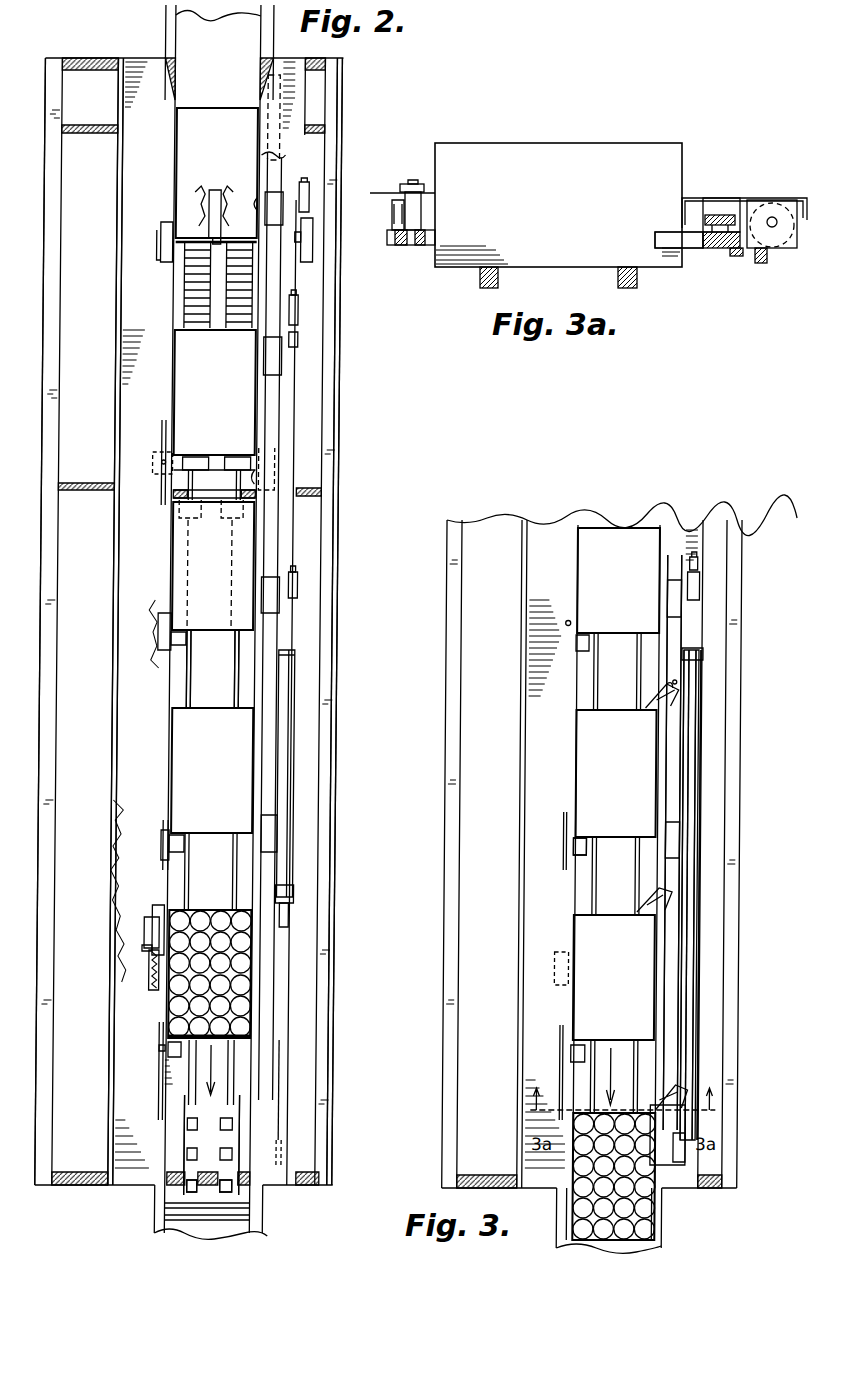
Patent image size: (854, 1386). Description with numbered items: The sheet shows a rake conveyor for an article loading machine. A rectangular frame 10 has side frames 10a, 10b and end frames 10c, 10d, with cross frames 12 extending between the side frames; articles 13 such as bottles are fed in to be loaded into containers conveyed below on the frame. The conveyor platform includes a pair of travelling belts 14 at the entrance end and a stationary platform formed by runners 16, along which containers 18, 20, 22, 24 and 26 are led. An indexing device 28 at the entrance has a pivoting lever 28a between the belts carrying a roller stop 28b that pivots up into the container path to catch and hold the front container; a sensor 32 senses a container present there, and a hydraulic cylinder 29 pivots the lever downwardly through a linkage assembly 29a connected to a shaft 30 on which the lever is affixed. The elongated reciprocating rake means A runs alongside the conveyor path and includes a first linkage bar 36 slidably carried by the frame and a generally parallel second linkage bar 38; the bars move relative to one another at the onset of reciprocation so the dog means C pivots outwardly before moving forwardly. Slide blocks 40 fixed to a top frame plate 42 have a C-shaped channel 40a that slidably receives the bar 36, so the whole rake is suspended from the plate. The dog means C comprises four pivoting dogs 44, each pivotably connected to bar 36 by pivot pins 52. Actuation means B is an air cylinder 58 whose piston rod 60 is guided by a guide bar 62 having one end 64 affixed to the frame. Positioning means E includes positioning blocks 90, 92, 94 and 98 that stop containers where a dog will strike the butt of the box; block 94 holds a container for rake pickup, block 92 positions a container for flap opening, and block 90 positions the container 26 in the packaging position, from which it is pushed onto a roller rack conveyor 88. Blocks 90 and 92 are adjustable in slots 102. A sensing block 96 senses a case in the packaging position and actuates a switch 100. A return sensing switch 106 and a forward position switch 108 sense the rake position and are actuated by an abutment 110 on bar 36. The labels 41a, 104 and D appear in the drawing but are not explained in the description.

In FIG. 2, the rectangular frame 10 is at (336, 1012).
In FIG. 2, the side frame 10a is at (341, 944).
In FIG. 2, the side frame 10b is at (52, 823).
In FIG. 2, the end frame 10c is at (67, 1185).
In FIG. 2, the end frame 10d is at (72, 59).
In FIG. 2, the cross frame 12 is at (92, 482).
In FIG. 2, the articles 13 is at (252, 962).
In FIG. 3, the articles 13 is at (613, 1176).
In FIG. 2, the belts 14 is at (206, 442).
In FIG. 2, the runners 16 is at (190, 682).
In FIG. 2, the container 18 is at (224, 165).
In FIG. 2, the container 20 is at (226, 404).
In FIG. 2, the container 22 is at (227, 574).
In FIG. 2, the container 24 is at (229, 772).
In FIG. 2, the container 26 is at (254, 1032).
In FIG. 2, the indexing device 28 is at (200, 210).
In FIG. 2, the pivoting lever 28a is at (214, 196).
In FIG. 2, the roller stop 28b is at (222, 248).
In FIG. 2, the hydraulic cylinder 29 is at (317, 237).
In FIG. 2, the linkage assembly 29a is at (312, 202).
In FIG. 2, the shaft 30 is at (264, 208).
In FIG. 2, the sensor 32 is at (164, 238).
In FIG. 3A, the first linkage bar 36 is at (680, 198).
In FIG. 3A, the second linkage bar 38 is at (730, 256).
In FIG. 3A, the slide blocks 40 is at (732, 212).
In FIG. 3A, the C-shaped channel 40a is at (714, 210).
In FIG. 3, the roller bracket 41a is at (680, 1096).
In FIG. 2, the top frame plate 42 is at (294, 1186).
In FIG. 3A, the top frame plate 42 is at (751, 198).
In FIG. 3, the pivoting dogs 44 is at (660, 696).
In FIG. 3A, the pivot pins 52 is at (670, 232).
In FIG. 2, the air cylinder 58 is at (290, 735).
In FIG. 3A, the air cylinder 58 is at (770, 206).
In FIG. 3, the air cylinder 58 is at (696, 821).
In FIG. 3A, the piston rod 60 is at (775, 232).
In FIG. 3, the piston rod 60 is at (690, 960).
In FIG. 3A, the guide bar 62 is at (763, 264).
In FIG. 2, the end of guide bar 64 is at (290, 1118).
In FIG. 2, the roller rack conveyor 88 is at (194, 1190).
In FIG. 2, the positioning block 90 is at (172, 1050).
In FIG. 2, the positioning block 92 is at (182, 838).
In FIG. 2, the positioning block 94 is at (168, 486).
In FIG. 2, the sensing block 96 is at (158, 974).
In FIG. 2, the positioning block 98 is at (160, 630).
In FIG. 2, the switch 100 is at (152, 938).
In FIG. 2, the slots 102 is at (170, 1064).
In FIG. 2, the inner wall 104 is at (120, 410).
In FIG. 2, the return sensing switch 106 is at (301, 310).
In FIG. 2, the forward position switch 108 is at (303, 584).
In FIG. 2, the abutment 110 is at (303, 348).
In FIG. 2, the rake means A is at (276, 754).
In FIG. 3, the rake means A is at (673, 1000).
In FIG. 2, the actuation means B is at (294, 886).
In FIG. 3, the actuation means B is at (696, 778).
In FIG. 2, the dog means C is at (286, 476).
In FIG. 3A, the dog means C is at (658, 238).
In FIG. 3, the dog means C is at (656, 904).
In FIG. 2, the zone D is at (198, 662).
In FIG. 2, the positioning means E is at (190, 850).
In FIG. 3A, the positioning means E is at (444, 232).
In FIG. 3, the positioning means E is at (590, 847).